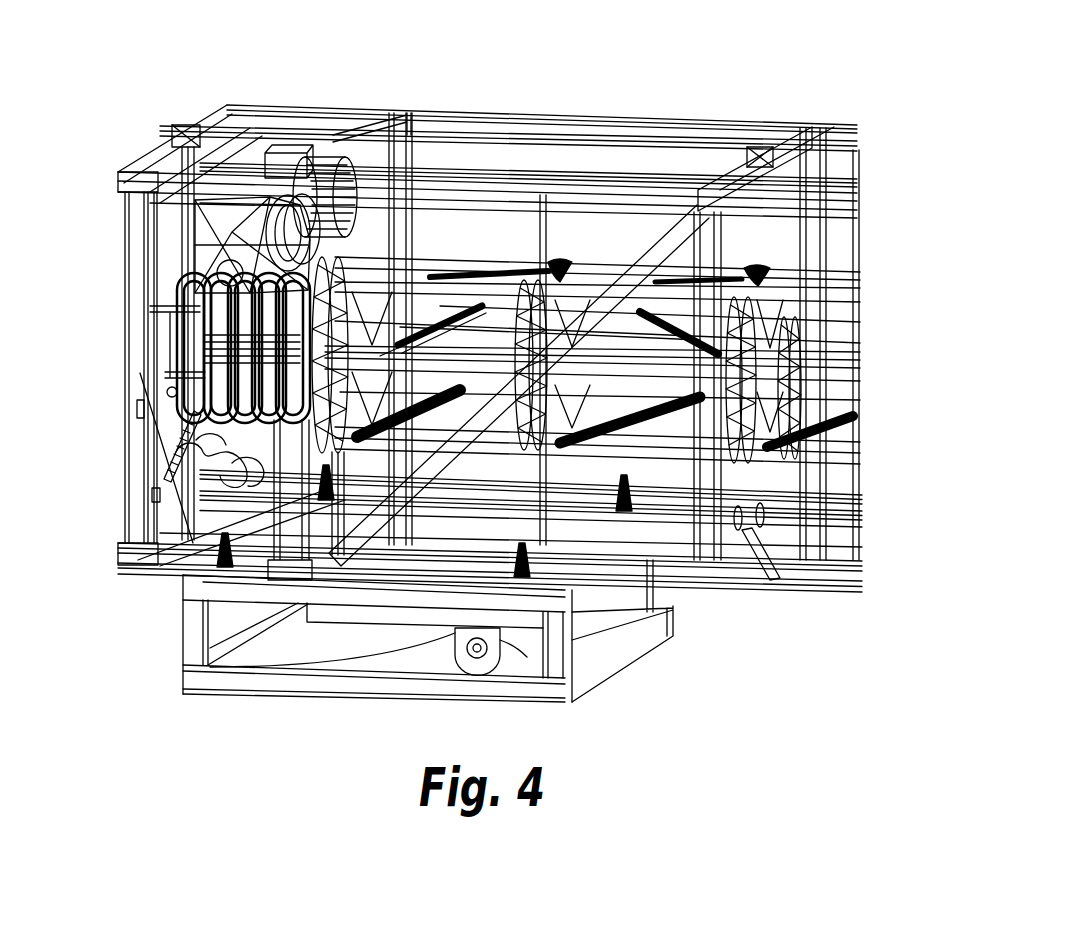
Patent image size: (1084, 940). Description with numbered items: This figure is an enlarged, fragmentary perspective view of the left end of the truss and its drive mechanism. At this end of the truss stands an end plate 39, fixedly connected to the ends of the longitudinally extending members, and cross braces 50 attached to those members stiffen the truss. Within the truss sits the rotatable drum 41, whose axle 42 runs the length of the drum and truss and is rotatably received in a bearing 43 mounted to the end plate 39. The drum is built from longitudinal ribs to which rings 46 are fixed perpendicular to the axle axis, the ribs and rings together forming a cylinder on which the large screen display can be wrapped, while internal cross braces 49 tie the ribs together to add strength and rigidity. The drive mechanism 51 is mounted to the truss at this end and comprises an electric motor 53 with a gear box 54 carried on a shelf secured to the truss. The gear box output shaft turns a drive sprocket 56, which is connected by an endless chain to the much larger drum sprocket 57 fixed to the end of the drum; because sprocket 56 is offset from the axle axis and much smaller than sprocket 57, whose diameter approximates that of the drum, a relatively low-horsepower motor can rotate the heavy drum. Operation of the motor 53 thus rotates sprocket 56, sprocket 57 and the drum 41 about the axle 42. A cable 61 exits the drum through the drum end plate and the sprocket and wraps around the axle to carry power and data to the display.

The end plate 39 is at (162, 218).
The rotatable drum 41 is at (465, 282).
The axle 42 is at (182, 379).
The bearing 43 is at (182, 314).
The rings 46 is at (558, 262).
The cross braces 49 is at (476, 322).
The cross braces 50 is at (455, 432).
The drive mechanism 51 is at (360, 142).
The electric motor 53 is at (340, 152).
The gear box 54 is at (214, 185).
The drive sprocket 56 is at (320, 146).
The drum sprocket 57 is at (300, 446).
The cable 61 is at (412, 378).